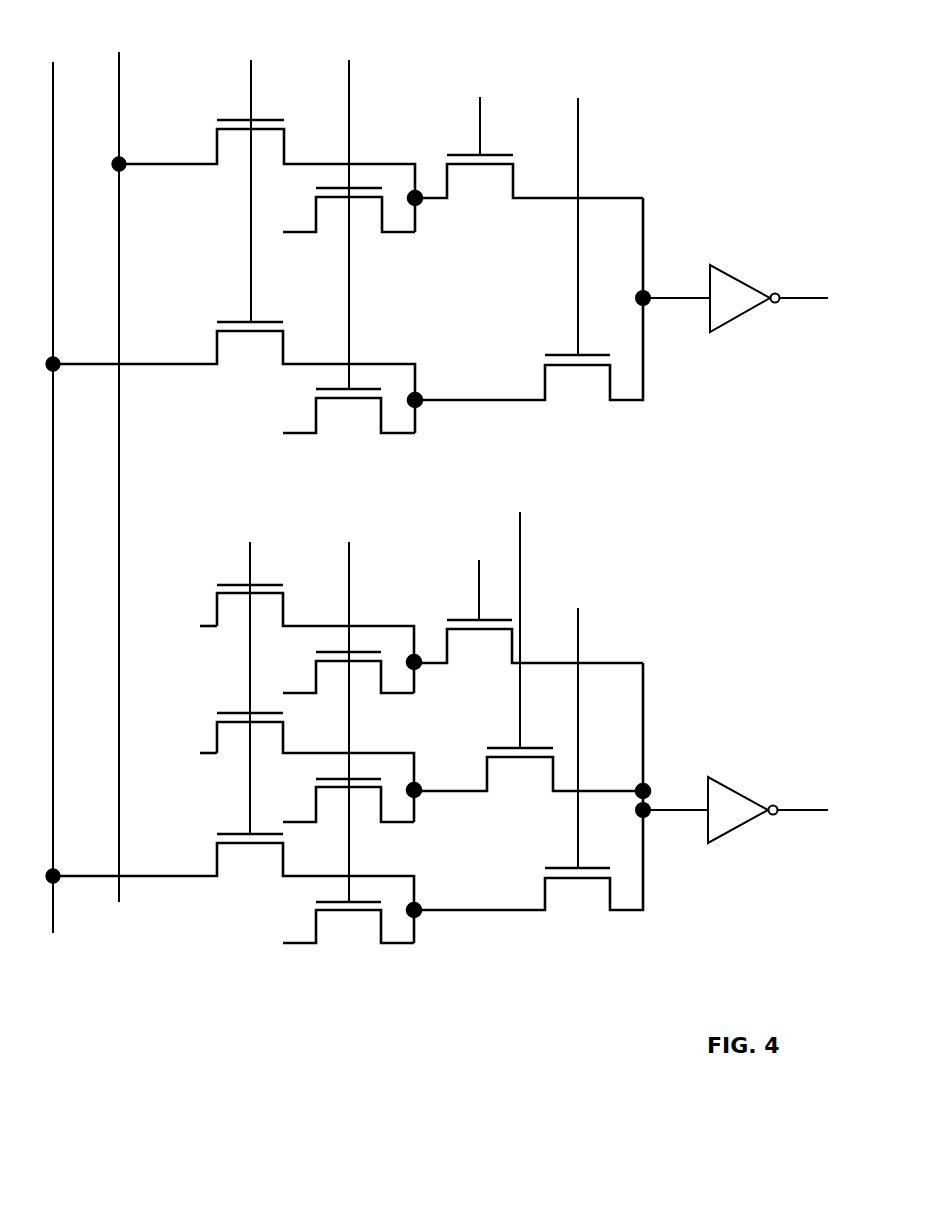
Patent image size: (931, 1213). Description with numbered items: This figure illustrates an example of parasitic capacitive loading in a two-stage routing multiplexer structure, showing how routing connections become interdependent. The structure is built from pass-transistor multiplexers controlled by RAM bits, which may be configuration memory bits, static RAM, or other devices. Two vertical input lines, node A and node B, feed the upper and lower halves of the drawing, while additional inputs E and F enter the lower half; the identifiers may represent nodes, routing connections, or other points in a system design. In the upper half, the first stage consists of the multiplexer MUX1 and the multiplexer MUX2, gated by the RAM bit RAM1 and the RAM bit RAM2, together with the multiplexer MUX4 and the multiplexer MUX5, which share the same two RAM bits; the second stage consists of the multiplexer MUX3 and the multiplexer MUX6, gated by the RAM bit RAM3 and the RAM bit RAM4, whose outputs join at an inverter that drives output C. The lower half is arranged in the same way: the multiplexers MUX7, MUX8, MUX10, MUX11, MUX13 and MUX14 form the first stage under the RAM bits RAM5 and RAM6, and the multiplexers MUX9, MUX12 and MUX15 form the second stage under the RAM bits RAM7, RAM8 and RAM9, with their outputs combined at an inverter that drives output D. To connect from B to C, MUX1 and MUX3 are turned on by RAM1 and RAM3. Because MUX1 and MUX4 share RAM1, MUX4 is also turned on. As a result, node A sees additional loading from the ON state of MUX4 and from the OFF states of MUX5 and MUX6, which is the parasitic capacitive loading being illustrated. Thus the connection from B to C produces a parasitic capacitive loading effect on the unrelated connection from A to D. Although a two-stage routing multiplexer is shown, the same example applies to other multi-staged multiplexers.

The node A is at (54, 481).
The node B is at (119, 457).
The node C is at (732, 298).
The node D is at (732, 810).
The input signal E is at (192, 625).
The input signal F is at (192, 748).
The element RAM1 is at (249, 171).
The RAM configuration bit 2 (gate control) RAM2 is at (349, 204).
The element RAM3 is at (477, 114).
The RAM configuration bit 4 (gate control) RAM4 is at (592, 214).
The RAM configuration bit 5 (gate control) RAM5 is at (249, 677).
The RAM configuration bit 6 (gate control) RAM6 is at (349, 712).
The RAM configuration bit 7 (gate control) RAM7 is at (477, 579).
The RAM configuration bit 8 (gate control) RAM8 is at (525, 619).
The RAM configuration bit 9 (gate control) RAM9 is at (574, 726).
The element MUX1 is at (267, 176).
The multiplexer pass transistor MUX2 is at (349, 210).
The element MUX3 is at (525, 180).
The element MUX4 is at (234, 377).
The element MUX5 is at (349, 411).
The element MUX6 is at (525, 302).
The multiplexer pass transistor MUX7 is at (315, 639).
The multiplexer pass transistor MUX8 is at (348, 672).
The multiplexer pass transistor MUX9 is at (525, 644).
The multiplexer pass transistor MUX10 is at (315, 767).
The multiplexer pass transistor MUX11 is at (348, 800).
The multiplexer pass transistor MUX12 is at (528, 773).
The multiplexer pass transistor MUX13 is at (233, 888).
The multiplexer pass transistor MUX14 is at (348, 922).
The multiplexer pass transistor MUX15 is at (525, 790).